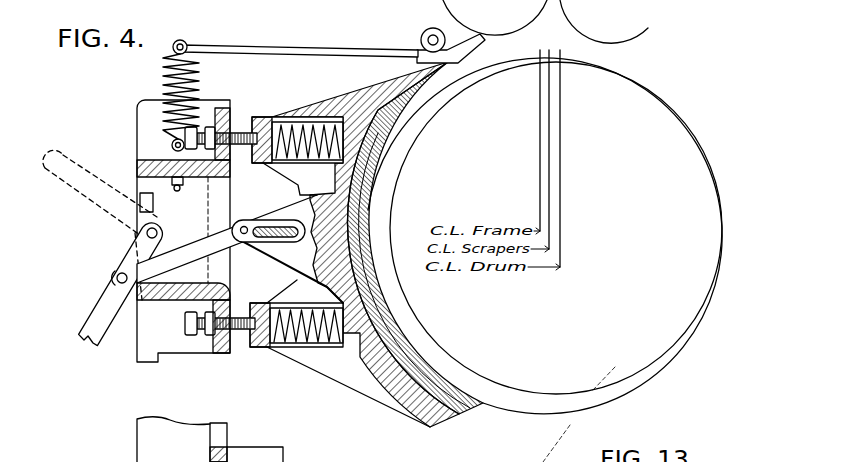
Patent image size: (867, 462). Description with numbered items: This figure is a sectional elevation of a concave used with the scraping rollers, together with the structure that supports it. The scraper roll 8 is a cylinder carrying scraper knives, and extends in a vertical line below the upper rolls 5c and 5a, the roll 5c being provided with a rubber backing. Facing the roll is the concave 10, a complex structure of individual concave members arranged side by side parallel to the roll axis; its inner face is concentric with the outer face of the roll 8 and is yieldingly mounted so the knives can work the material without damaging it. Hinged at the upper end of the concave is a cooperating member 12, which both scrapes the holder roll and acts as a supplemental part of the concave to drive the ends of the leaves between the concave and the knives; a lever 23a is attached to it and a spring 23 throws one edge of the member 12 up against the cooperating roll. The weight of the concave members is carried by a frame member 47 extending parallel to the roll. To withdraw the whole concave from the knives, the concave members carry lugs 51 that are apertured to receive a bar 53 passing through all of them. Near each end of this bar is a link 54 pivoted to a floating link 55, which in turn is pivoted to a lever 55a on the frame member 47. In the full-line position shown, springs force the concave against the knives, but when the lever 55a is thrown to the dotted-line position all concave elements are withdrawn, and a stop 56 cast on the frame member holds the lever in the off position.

The roll 5a is at (602, 34).
The roll 5c is at (463, 28).
The scraper roll 8 is at (664, 362).
The concave 10 is at (438, 429).
The cooperating member 12 is at (472, 42).
The spring 23 is at (200, 72).
The lever 23a is at (328, 38).
The frame member 47 is at (150, 335).
The lug 51 is at (260, 247).
The bar 53 is at (283, 238).
The link 54 is at (248, 222).
The floating link 55 is at (185, 237).
The pivoted lever 55a is at (97, 310).
The stop 56 is at (140, 198).